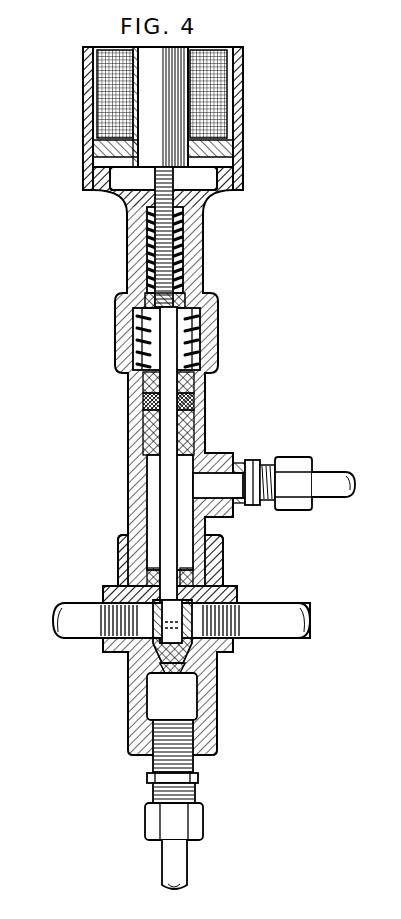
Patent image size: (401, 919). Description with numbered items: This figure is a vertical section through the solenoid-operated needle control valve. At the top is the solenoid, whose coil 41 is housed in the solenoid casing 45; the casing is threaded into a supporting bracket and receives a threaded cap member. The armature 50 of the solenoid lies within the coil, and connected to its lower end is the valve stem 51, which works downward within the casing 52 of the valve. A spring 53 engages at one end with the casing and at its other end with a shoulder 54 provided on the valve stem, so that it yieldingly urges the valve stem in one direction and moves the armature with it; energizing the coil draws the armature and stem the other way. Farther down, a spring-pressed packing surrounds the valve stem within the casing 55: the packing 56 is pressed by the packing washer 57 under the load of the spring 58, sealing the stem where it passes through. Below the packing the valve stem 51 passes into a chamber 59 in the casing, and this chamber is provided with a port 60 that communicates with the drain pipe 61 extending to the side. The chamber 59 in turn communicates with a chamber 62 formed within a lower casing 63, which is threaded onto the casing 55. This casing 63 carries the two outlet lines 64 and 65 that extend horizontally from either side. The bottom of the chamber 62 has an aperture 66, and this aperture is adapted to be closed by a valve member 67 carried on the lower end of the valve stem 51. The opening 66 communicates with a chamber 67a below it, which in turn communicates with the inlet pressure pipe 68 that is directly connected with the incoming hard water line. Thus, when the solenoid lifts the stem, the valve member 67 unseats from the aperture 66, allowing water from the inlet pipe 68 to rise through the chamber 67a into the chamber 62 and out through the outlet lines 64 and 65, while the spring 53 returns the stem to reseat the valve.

The solenoid coil 41 is at (102, 94).
The solenoid casing 45 is at (85, 116).
The armature 50 is at (146, 160).
The valve stem 51 is at (175, 180).
The valve casing 52 is at (100, 205).
The spring 53 is at (146, 248).
The shoulder 54 is at (148, 298).
The casing 55 is at (135, 440).
The packing 56 is at (144, 410).
The packing washer 57 is at (143, 387).
The spring 58 is at (143, 336).
The chamber 59 is at (150, 468).
The port 60 is at (216, 478).
The drain pipe 61 is at (327, 472).
The chamber 62 is at (152, 593).
The casing 63 is at (116, 552).
The outlet line 64 is at (73, 633).
The outlet line 65 is at (294, 633).
The aperture 66 is at (177, 671).
The valve member 67 is at (155, 664).
The chamber 67a is at (195, 707).
The inlet pressure pipe 68 is at (153, 770).